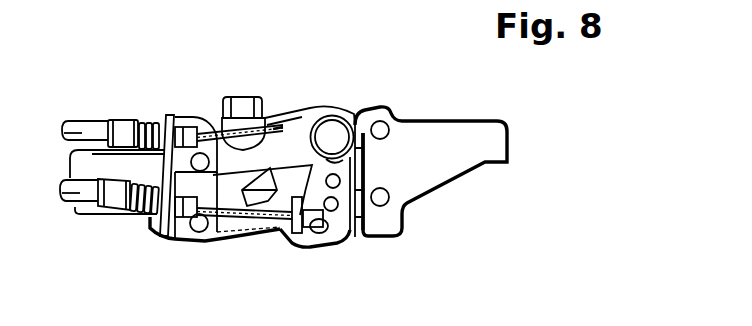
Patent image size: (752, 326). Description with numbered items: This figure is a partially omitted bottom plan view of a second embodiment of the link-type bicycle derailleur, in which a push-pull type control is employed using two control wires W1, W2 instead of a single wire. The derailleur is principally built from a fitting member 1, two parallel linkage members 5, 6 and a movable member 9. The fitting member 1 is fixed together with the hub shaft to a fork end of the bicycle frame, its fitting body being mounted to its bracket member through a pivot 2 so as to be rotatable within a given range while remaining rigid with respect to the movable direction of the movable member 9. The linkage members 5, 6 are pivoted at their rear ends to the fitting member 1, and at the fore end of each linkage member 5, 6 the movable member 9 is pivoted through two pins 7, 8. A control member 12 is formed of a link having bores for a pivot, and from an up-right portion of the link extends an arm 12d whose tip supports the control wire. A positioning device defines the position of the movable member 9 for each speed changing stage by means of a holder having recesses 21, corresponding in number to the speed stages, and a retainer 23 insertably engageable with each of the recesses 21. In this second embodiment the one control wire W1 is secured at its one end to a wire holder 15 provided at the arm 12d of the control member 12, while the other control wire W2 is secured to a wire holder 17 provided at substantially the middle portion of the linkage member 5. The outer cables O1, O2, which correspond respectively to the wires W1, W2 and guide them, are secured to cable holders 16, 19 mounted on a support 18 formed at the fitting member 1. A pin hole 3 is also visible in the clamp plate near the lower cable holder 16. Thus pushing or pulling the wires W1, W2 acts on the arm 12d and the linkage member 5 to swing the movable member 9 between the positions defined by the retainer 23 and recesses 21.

The outer cable O2 is at (70, 125).
The fitting member 1 is at (98, 160).
The pivot 2 is at (190, 157).
The control wire W2 is at (200, 133).
The cable holder 19 is at (190, 128).
The wire holder 17 is at (247, 97).
The recesses 21 is at (285, 110).
The control member 12 is at (297, 143).
The retainer 23 is at (332, 128).
The linkage member 5 is at (357, 117).
The pin 7 is at (382, 128).
The movable member 9 is at (500, 143).
The outer cable O1 is at (88, 205).
The support 18 is at (133, 208).
The cable holder 16 is at (167, 233).
The pin hole 3 is at (197, 230).
The control wire W1 is at (224, 241).
The arm 12d is at (267, 233).
The wire holder 15 is at (297, 237).
The linkage member 6 is at (348, 221).
The pin 8 is at (382, 210).